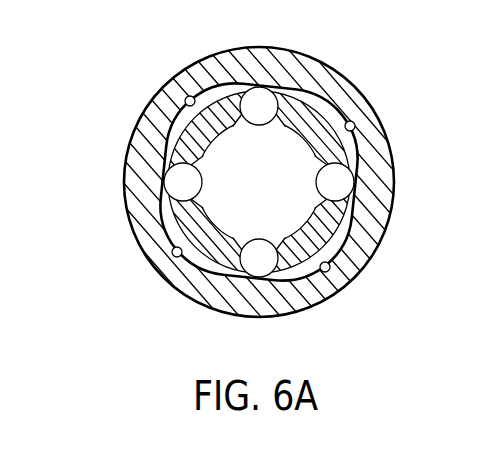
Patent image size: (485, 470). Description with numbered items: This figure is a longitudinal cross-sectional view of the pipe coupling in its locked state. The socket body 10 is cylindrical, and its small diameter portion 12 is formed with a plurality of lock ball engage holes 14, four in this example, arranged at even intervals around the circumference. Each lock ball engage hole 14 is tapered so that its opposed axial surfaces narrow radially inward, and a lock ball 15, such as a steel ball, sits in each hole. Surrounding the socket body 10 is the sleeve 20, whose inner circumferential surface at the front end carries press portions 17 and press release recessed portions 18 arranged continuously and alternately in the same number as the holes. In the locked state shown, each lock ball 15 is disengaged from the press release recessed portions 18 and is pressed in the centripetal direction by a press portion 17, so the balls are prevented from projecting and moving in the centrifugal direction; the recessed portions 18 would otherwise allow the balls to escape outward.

The socket body 10 is at (302, 187).
The small diameter portion 12 is at (358, 262).
The lock ball engage holes 14 is at (227, 83).
The lock ball 15 is at (271, 123).
The press portions 17 is at (300, 92).
The press release recessed portions 18 is at (188, 97).
The sleeve 20 is at (261, 185).